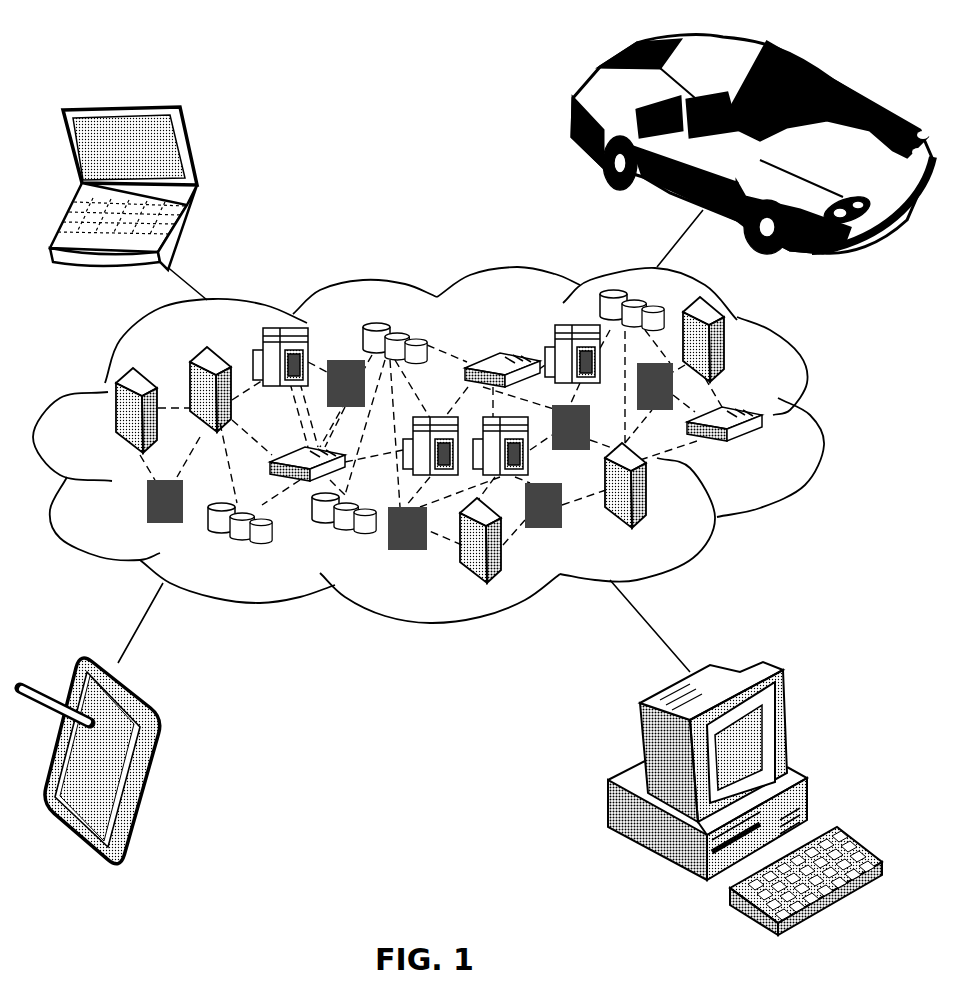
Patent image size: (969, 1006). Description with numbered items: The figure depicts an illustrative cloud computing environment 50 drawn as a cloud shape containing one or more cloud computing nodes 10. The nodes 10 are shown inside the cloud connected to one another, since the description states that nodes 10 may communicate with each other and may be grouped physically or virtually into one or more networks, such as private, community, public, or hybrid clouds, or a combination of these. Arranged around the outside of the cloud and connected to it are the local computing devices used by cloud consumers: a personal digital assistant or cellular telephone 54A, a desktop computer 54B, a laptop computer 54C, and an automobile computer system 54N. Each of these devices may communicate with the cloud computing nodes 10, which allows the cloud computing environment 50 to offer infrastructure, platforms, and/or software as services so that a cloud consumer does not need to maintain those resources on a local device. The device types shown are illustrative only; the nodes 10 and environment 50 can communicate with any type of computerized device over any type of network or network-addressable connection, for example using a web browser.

The cloud computing environment 50 is at (824, 426).
The cloud computing nodes 10 is at (778, 456).
The personal digital assistant (PDA) or cellular telephone 54A is at (158, 752).
The desktop computer 54B is at (757, 665).
The laptop computer 54C is at (192, 150).
The automobile computer system 54N is at (572, 118).